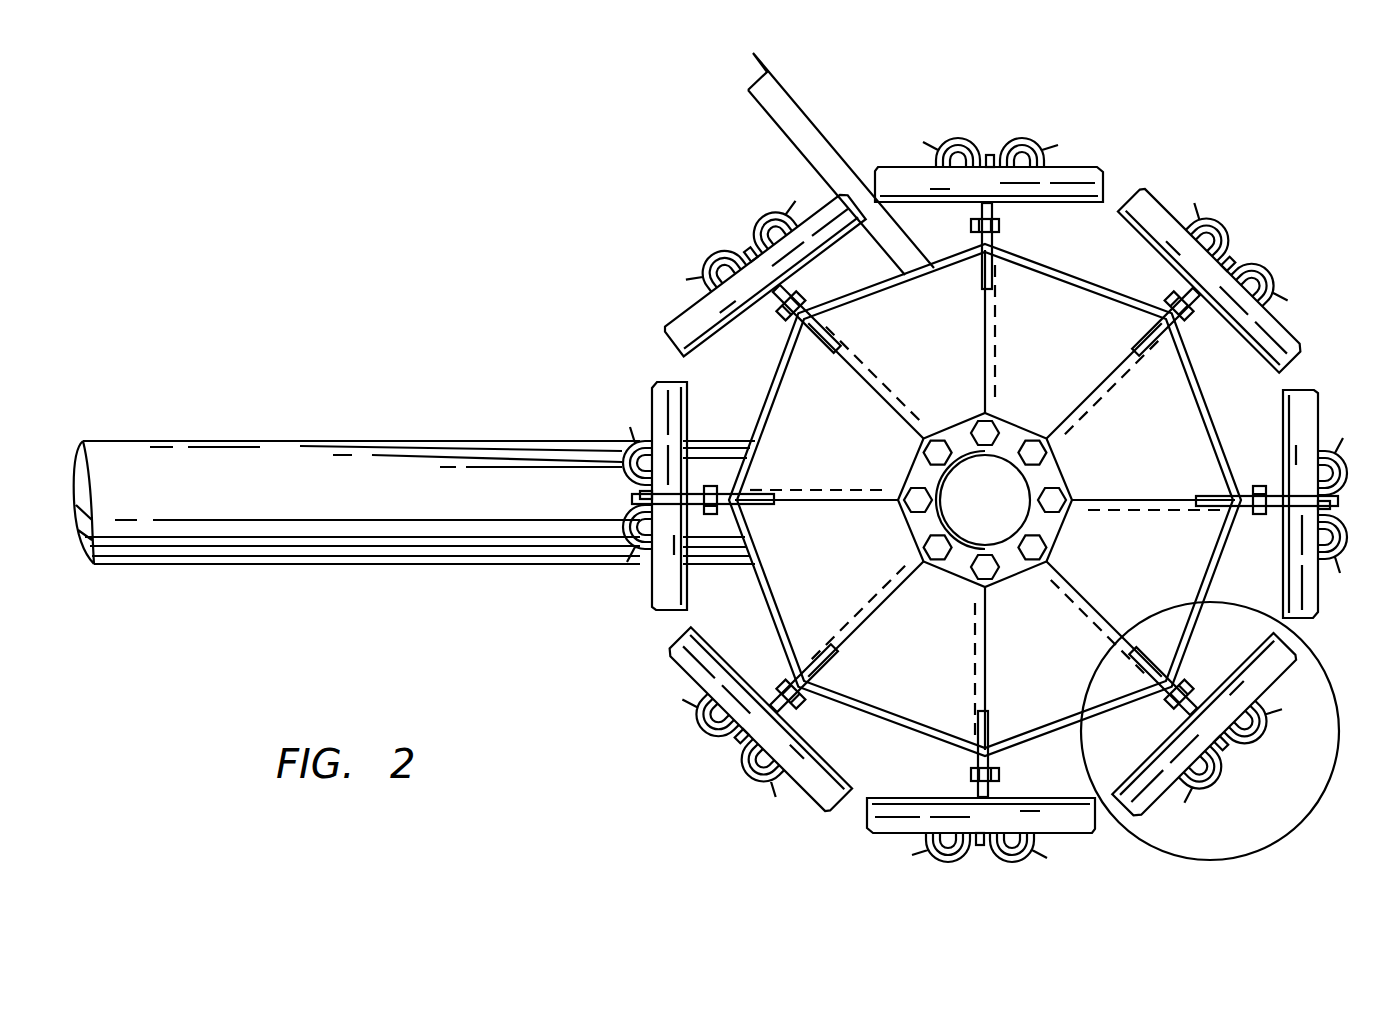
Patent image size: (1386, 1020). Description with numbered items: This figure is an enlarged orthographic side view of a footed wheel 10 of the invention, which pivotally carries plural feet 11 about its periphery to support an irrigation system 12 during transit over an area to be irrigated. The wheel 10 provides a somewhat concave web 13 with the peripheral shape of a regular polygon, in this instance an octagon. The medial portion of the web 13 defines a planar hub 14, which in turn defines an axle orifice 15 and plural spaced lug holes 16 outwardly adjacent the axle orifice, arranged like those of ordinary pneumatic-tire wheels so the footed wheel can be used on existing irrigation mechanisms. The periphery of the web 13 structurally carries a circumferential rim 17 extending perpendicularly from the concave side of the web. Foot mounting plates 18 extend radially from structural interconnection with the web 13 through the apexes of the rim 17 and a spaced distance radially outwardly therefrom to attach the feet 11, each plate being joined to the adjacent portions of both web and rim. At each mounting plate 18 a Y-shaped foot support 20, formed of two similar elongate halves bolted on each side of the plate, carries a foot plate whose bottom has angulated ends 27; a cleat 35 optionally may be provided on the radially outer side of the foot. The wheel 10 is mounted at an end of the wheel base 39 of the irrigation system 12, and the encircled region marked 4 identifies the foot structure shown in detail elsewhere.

The wheel 10 is at (800, 450).
The feet 11 is at (1085, 140).
The irrigation system 12 is at (425, 432).
The web 13 is at (1113, 420).
The hub 14 is at (925, 525).
The axle orifice 15 is at (968, 496).
The lug holes 16 is at (970, 580).
The circumferential rim 17 is at (1064, 268).
The foot mounting plates 18 is at (1158, 655).
The foot support 20 is at (968, 772).
The angulated ends 27 is at (700, 660).
The cleat 35 is at (918, 865).
The wheel base 39 is at (405, 510).
The detail area of FIG. 4 is at (1306, 830).